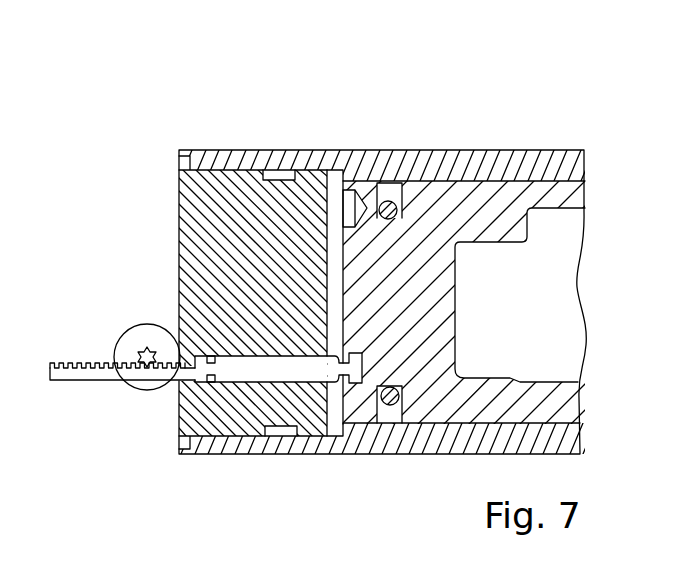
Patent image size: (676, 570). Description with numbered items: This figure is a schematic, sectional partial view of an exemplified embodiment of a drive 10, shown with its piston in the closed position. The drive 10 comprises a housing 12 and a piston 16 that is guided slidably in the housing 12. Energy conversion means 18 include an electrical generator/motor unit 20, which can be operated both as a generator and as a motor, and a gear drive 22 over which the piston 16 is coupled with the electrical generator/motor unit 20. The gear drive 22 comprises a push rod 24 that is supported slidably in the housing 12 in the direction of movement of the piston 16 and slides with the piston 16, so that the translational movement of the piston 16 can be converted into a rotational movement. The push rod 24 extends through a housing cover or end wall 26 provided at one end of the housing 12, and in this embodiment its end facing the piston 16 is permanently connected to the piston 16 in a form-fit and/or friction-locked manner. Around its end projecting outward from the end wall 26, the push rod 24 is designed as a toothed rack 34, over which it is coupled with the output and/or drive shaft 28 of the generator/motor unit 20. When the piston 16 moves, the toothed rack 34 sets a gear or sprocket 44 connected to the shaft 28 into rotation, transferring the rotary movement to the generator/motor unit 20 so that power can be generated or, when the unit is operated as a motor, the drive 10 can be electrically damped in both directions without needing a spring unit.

The drive 10 is at (430, 97).
The housing 12 is at (545, 160).
The piston 16 is at (457, 192).
The energy conversion means 18 is at (118, 369).
The electrical generator/motor unit 20 is at (134, 343).
The gear drive 22 is at (134, 402).
The push rod 24 is at (248, 373).
The housing cover or end wall 26 is at (293, 195).
The output and/or drive shaft 28 is at (150, 351).
The toothed rack 34 is at (117, 393).
The gear or sprocket 44 is at (133, 355).